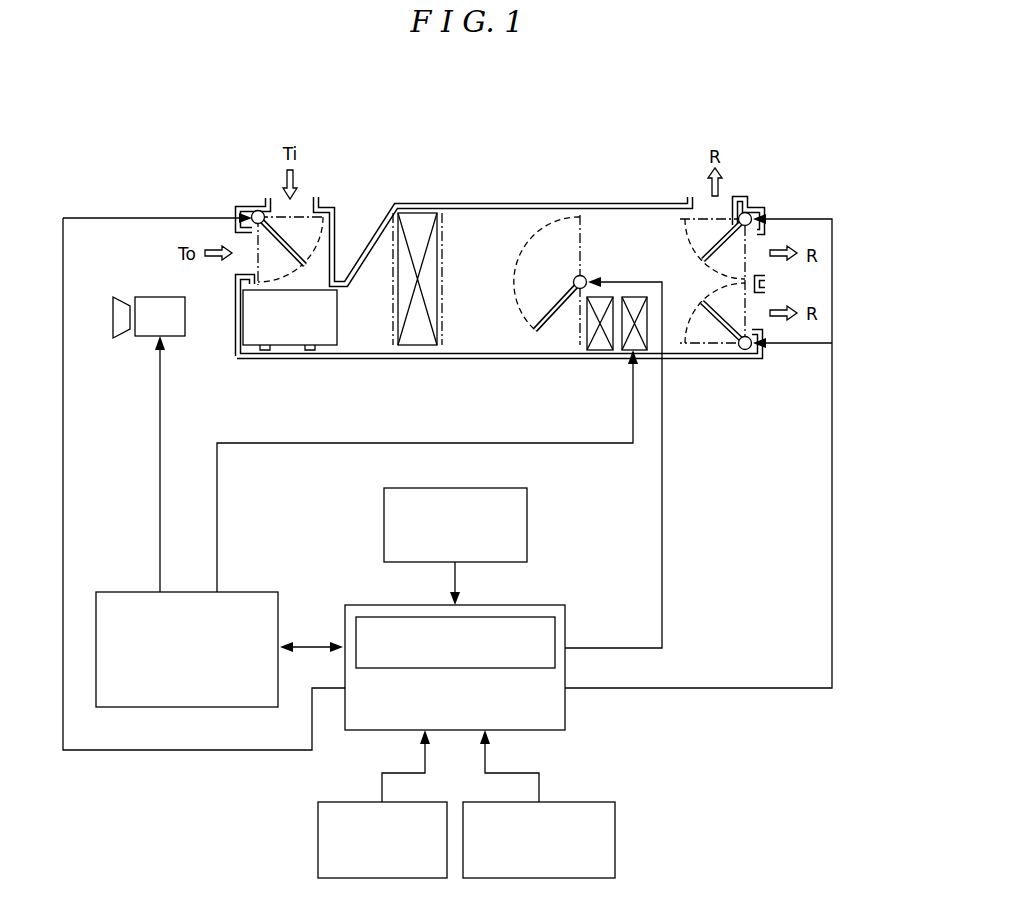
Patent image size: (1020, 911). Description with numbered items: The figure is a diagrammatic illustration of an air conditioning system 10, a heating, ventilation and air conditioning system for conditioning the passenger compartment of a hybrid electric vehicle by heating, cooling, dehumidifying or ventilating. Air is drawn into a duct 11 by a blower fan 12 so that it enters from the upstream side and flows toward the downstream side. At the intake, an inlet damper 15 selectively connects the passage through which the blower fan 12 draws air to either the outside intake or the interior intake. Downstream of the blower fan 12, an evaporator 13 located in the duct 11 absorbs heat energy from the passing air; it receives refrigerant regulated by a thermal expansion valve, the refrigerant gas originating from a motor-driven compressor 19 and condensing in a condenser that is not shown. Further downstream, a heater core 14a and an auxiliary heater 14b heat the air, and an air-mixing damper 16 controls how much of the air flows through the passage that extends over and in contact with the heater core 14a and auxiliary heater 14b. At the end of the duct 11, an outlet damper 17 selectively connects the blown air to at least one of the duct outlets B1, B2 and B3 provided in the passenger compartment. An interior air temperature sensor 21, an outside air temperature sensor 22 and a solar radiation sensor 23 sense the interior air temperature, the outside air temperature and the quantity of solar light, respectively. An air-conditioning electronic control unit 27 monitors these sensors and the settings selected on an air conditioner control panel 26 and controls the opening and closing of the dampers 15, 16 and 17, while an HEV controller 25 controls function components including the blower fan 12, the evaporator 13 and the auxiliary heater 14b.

The air conditioning system 10 is at (805, 147).
The duct 11 is at (530, 204).
The blower fan 12 is at (337, 330).
The evaporator 13 is at (437, 250).
The heater core 14a is at (590, 350).
The auxiliary heater 14b is at (625, 350).
The inlet damper 15 is at (291, 236).
The air-mixing damper 16 is at (550, 302).
The outlet damper 17 is at (701, 253).
The motor-driven compressor 19 is at (160, 297).
The interior air temperature sensor 21 is at (615, 840).
The outside air temperature sensor 22 is at (527, 527).
The solar radiation sensor 23 is at (318, 840).
The HEV controller 25 is at (128, 592).
The air conditioner control panel 26 is at (400, 617).
The air-conditioning electronic control unit 27 is at (490, 605).
The duct outlet B1 is at (738, 200).
The duct outlet B2 is at (771, 233).
The duct outlet B3 is at (767, 286).